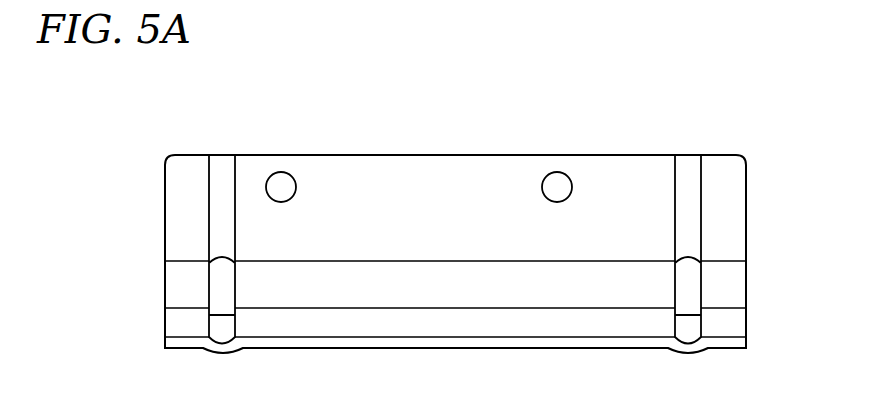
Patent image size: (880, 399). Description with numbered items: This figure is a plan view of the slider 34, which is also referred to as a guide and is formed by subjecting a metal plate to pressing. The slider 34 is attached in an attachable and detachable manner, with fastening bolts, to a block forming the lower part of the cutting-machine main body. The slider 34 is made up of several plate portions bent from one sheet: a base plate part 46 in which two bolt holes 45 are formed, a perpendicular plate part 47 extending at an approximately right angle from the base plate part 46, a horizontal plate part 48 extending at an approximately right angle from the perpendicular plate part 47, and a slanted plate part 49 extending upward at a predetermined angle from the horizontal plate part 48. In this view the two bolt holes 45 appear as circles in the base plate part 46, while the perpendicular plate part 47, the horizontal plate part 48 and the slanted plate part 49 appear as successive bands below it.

The slider 34 is at (672, 117).
The bolt holes 45 is at (281, 187).
The base plate part 46 is at (735, 206).
The perpendicular plate part 47 is at (725, 265).
The horizontal plate part 48 is at (175, 287).
The slanted plate part 49 is at (173, 328).